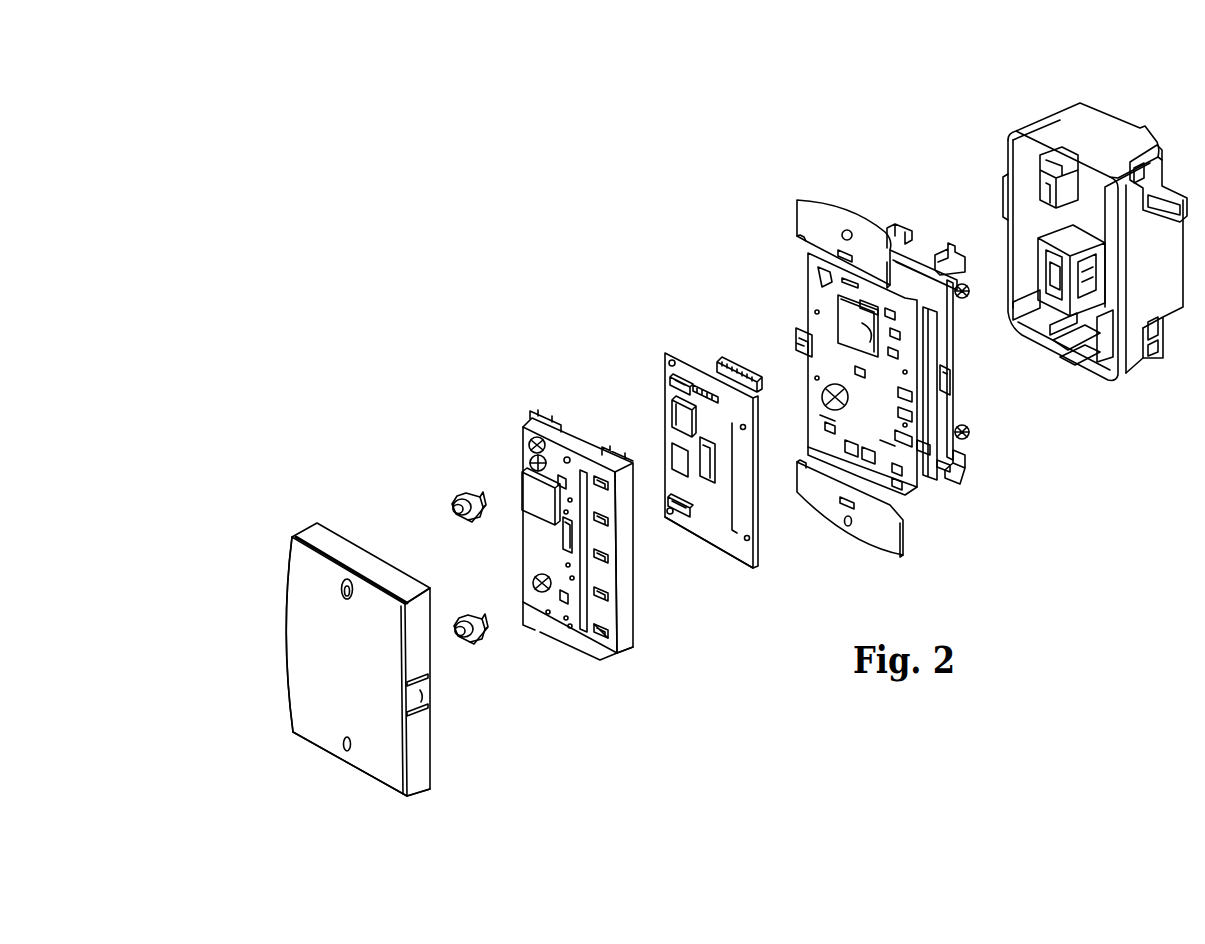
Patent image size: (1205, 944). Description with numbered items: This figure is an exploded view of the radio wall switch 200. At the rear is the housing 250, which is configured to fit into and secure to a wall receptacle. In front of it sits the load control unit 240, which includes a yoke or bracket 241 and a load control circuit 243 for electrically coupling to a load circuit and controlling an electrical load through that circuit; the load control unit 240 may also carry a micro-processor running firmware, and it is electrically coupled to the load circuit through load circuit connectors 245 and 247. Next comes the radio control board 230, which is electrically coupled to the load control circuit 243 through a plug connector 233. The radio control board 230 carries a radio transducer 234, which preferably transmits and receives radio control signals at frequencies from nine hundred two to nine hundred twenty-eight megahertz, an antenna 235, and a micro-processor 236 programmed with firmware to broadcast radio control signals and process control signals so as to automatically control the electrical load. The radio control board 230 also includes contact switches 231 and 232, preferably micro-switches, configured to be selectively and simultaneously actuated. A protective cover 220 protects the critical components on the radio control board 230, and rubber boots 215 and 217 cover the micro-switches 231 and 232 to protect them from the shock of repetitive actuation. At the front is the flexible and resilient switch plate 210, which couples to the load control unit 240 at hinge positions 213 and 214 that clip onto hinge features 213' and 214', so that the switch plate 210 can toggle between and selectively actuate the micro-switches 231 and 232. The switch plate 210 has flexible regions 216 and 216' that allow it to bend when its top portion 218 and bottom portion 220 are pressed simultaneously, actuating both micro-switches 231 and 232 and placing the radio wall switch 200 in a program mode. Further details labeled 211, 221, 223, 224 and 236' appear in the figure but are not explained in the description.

The radio wall switch 200 is at (442, 272).
The flexible and resilient switch plate 210 is at (311, 496).
The bottom edge of faceplate 211 is at (410, 796).
The hinge position 213 is at (456, 712).
The hinge feature 213' is at (924, 485).
The hinge position 214 is at (305, 666).
The hinge feature 214' is at (771, 314).
The rubber boot 215 is at (455, 496).
The flexible region 216 is at (447, 692).
The flexible region 216' is at (246, 634).
The rubber boot 217 is at (485, 642).
The top portion 218 is at (349, 578).
The protective cover 220 is at (352, 701).
The side of frame 221 is at (636, 640).
The mounting hole 223 is at (542, 592).
The mounting hole 224 is at (537, 450).
The radio control board 230 is at (665, 325).
The contact switch 231 is at (672, 382).
The contact switch 232 is at (673, 517).
The plug connector 233 is at (735, 362).
The radio transducer 234 is at (674, 412).
The antenna 235 is at (750, 555).
The micro-processor 236 is at (985, 386).
The component 236' is at (640, 440).
The load control unit 240 is at (813, 178).
The yoke or bracket 241 is at (850, 212).
The load control circuit 243 is at (957, 452).
The load circuit connector 245 is at (967, 300).
The load circuit connector 247 is at (968, 433).
The housing 250 is at (1060, 88).